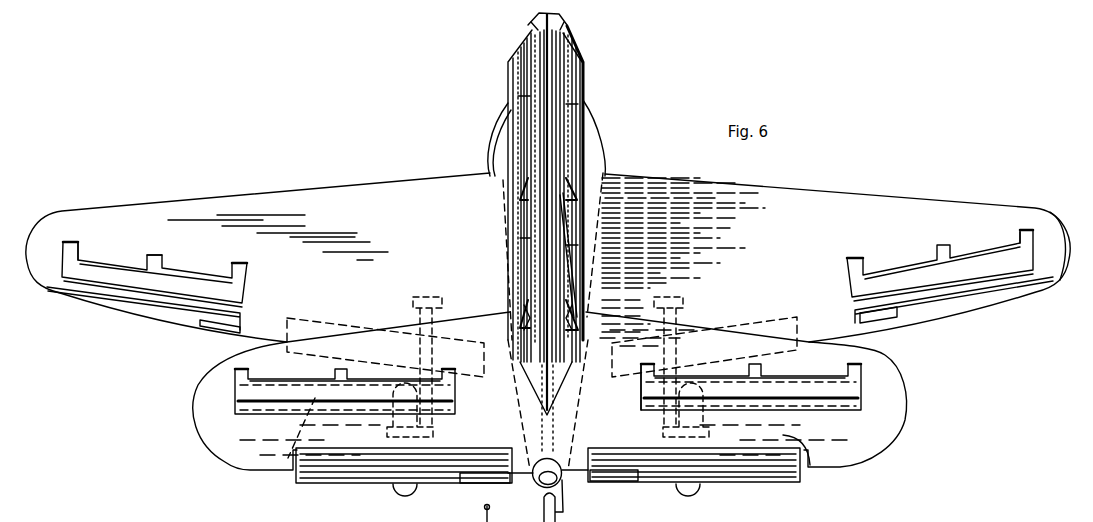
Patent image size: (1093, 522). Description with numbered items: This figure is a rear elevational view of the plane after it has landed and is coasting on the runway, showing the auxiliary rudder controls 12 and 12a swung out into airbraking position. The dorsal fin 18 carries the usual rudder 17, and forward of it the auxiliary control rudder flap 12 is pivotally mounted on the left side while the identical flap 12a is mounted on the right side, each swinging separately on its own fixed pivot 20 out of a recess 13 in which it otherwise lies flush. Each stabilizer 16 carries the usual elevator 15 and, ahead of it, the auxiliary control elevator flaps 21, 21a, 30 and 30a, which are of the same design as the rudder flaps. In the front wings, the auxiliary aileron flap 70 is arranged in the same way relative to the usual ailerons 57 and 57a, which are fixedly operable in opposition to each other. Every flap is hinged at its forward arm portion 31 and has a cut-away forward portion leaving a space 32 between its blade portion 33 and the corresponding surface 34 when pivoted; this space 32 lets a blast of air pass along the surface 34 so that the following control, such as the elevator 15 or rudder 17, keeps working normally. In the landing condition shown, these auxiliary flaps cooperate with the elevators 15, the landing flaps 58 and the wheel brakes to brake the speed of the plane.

The auxiliary control rudder flap 12 is at (507, 68).
The auxiliary control rudder flap 12a is at (585, 68).
The recess 13 is at (247, 278).
The elevator 15 is at (355, 475).
The stabilizer 16 is at (864, 448).
The rudder 17 is at (552, 95).
The dorsal fin 18 is at (533, 19).
The fixed pivot 20 is at (67, 247).
The auxiliary control elevator flap 21 is at (235, 408).
The auxiliary control elevator flap 21a is at (287, 443).
The auxiliary control elevator flap 30 is at (860, 390).
The auxiliary control elevator flap 30a is at (654, 412).
The forward arm portion 31 is at (568, 45).
The cut-away space 32 is at (525, 100).
The blade portion 33 is at (510, 140).
The corresponding surface 34 is at (1000, 285).
The aileron 57 is at (948, 305).
The aileron 57a is at (135, 313).
The landing flap 58 is at (328, 320).
The auxiliary aileron control flap 70 is at (1020, 258).